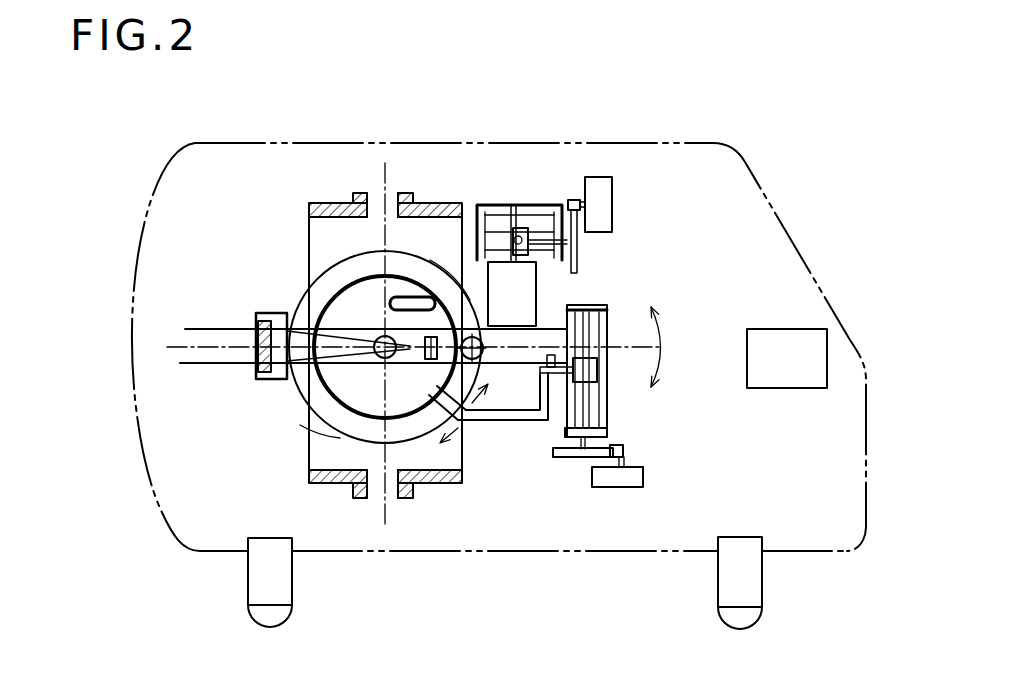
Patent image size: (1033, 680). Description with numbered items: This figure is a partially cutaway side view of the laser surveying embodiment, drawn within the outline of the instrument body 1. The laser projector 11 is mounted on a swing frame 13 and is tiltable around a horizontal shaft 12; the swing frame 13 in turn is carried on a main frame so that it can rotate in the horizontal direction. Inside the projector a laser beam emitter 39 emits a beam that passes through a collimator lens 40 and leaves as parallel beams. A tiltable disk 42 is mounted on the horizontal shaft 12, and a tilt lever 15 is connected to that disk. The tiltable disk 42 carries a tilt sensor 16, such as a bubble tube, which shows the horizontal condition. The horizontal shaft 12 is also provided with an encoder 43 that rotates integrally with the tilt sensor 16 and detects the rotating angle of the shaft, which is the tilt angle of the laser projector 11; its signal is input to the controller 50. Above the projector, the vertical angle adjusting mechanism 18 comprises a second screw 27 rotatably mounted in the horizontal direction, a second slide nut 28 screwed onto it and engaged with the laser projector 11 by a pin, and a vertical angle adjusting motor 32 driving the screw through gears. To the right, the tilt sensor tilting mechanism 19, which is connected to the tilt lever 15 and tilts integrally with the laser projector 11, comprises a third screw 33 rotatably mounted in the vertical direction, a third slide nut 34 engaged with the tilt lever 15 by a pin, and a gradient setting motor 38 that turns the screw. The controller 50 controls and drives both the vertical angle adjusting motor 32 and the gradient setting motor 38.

The vehicle body 1 is at (805, 263).
The laser projector 11 is at (312, 392).
The horizontal shaft 12 is at (326, 418).
The swing frame 13 is at (330, 203).
The tilt lever 15 is at (522, 420).
The tilt sensor 16 is at (403, 297).
The vertical angle adjusting mechanism 18 is at (585, 257).
The tilt sensor tilting mechanism 19 is at (623, 415).
The second screw 27 is at (548, 228).
The second slide nut 28 is at (517, 208).
The vertical angle adjusting motor 32 is at (603, 188).
The third screw 33 is at (590, 325).
The third slide nut 34 is at (603, 377).
The gradient setting motor 38 is at (618, 488).
The laser beam emitter 39 is at (428, 396).
The collimator lens 40 is at (252, 370).
The tiltable disk 42 is at (345, 313).
The encoder 43 is at (427, 277).
The controller 50 is at (827, 360).